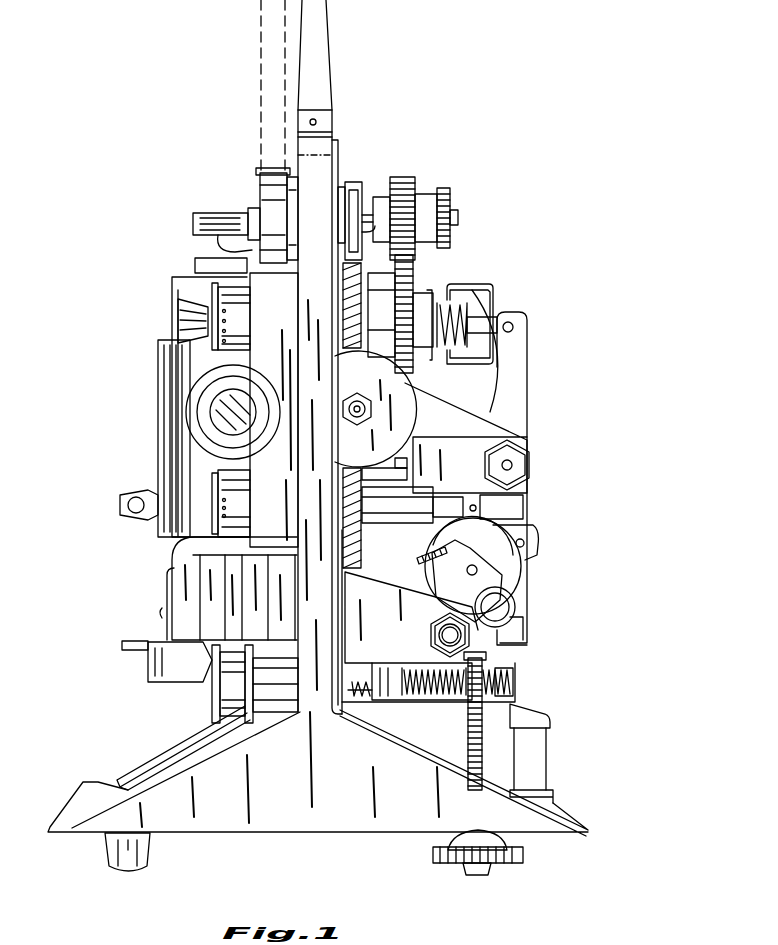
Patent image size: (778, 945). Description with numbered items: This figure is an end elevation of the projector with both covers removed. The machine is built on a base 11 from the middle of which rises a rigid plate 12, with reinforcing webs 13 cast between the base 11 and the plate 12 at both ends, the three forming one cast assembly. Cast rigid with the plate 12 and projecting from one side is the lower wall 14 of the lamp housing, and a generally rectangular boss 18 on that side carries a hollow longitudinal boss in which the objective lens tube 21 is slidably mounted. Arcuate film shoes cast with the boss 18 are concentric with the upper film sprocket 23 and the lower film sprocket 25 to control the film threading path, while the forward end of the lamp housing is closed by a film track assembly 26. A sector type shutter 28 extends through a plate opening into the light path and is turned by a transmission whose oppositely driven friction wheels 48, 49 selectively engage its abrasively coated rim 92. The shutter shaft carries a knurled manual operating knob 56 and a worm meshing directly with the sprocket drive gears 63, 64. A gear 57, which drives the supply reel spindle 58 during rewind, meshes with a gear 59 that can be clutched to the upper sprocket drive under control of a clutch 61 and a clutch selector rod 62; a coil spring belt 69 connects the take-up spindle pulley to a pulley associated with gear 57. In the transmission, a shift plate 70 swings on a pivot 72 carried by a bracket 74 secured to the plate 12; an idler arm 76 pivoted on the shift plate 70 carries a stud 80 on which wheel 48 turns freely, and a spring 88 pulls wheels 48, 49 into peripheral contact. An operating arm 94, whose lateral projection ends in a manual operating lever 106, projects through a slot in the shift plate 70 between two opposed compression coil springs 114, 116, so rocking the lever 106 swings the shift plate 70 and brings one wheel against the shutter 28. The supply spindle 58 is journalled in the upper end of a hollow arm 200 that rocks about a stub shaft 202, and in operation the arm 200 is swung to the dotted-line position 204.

The base 11 is at (76, 806).
The rigid plate 12 is at (333, 168).
The reinforcing webs 13 is at (148, 760).
The lower wall 14 is at (150, 664).
The rectangular boss 18 is at (288, 280).
The objective lens tube 21 is at (258, 395).
The upper film sprocket 23 is at (251, 318).
The lower film sprocket 25 is at (251, 488).
The film track assembly 26 is at (172, 592).
The sector type shutter 28 is at (508, 407).
The friction wheel 48 is at (524, 528).
The friction wheel 49 is at (390, 580).
The knurled manual operating knob 56 is at (412, 412).
The gear 57 is at (404, 177).
The supply reel spindle 58 is at (218, 213).
The gear 59 is at (414, 290).
The clutch 61 is at (482, 284).
The clutch selector rod 62 is at (178, 322).
The sprocket drive gear 63 is at (343, 272).
The sprocket drive gear 64 is at (362, 542).
The coil spring belt 69 is at (452, 197).
The shift plate 70 is at (500, 648).
The pivot 72 is at (440, 622).
The bracket 74 is at (392, 665).
The idler arm 76 is at (517, 600).
The stud 80 is at (523, 567).
The spring 88 is at (446, 559).
The abrasive coating 92 is at (488, 372).
The operating arm 94 is at (455, 700).
The manual operating lever 106 is at (128, 641).
The compression coil spring 114 is at (505, 682).
The compression coil spring 116 is at (426, 668).
The hollow arm 200 is at (268, 262).
The stub shaft 202 is at (459, 218).
The dotted line position 204 is at (258, 92).